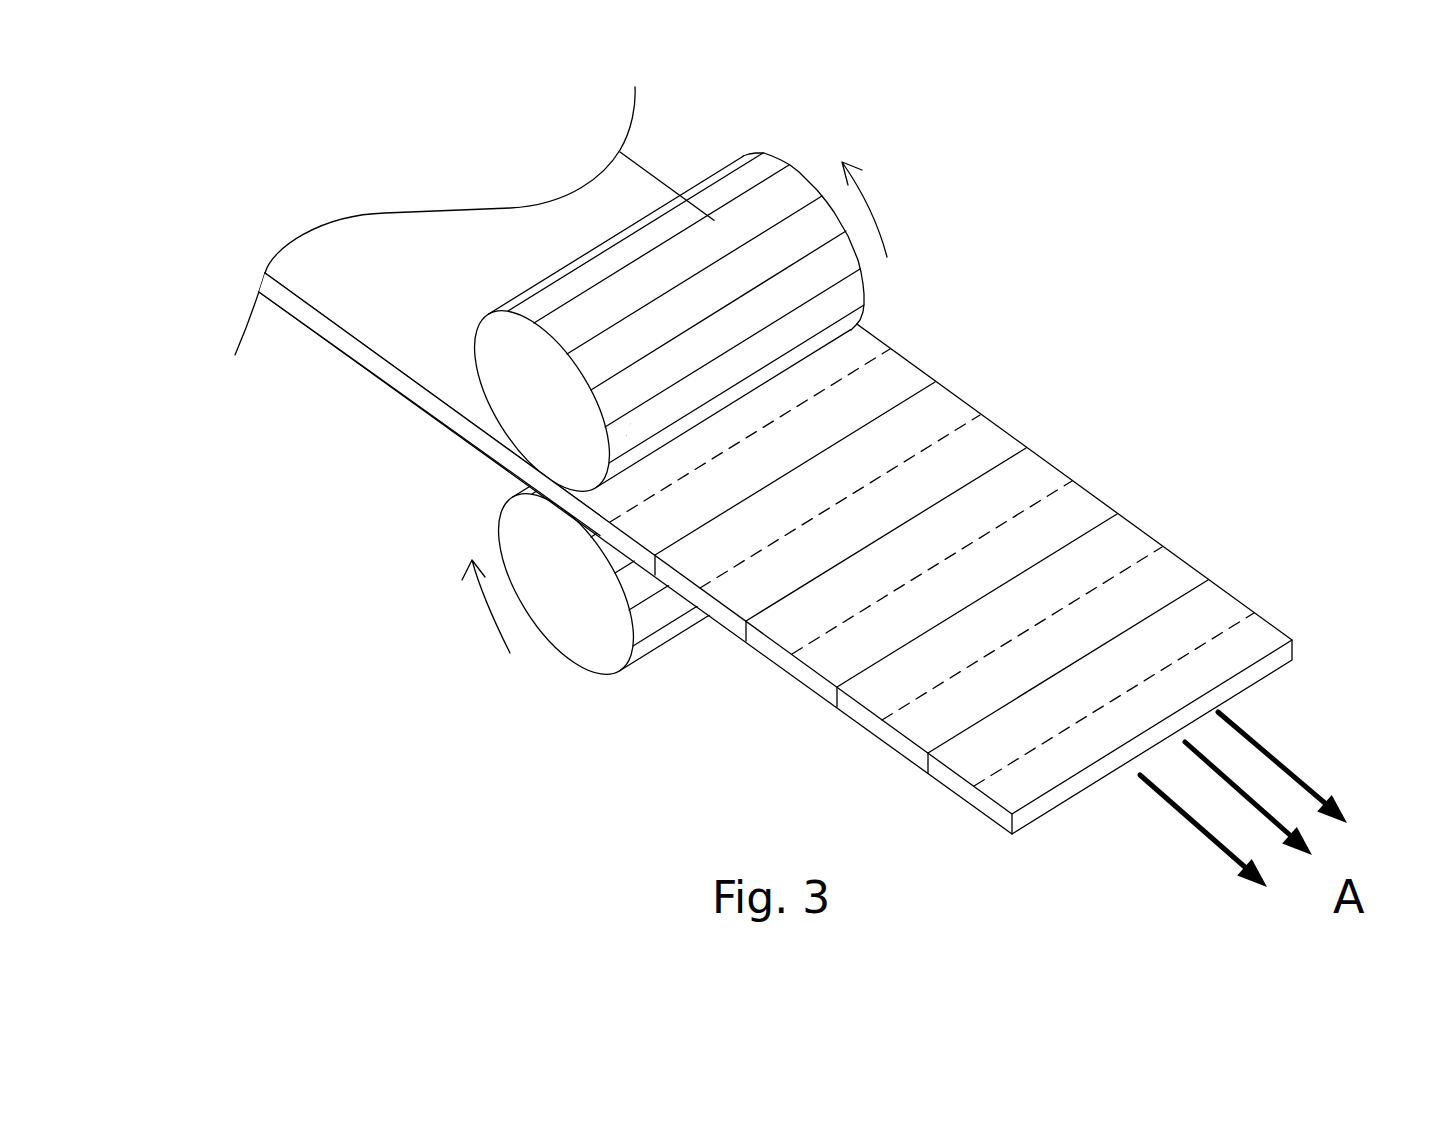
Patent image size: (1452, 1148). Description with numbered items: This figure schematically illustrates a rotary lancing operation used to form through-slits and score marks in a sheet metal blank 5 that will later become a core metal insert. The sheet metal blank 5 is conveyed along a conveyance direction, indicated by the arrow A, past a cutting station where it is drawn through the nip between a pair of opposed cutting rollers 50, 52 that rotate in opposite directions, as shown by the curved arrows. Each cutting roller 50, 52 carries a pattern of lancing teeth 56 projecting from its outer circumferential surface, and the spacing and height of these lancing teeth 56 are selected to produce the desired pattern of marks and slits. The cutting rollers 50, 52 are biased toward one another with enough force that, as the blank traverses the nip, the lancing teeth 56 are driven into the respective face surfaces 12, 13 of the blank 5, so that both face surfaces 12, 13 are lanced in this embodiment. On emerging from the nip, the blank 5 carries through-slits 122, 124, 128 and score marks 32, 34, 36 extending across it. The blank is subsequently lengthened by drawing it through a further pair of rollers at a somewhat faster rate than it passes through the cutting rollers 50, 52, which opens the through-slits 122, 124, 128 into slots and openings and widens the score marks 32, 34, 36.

The sheet metal blank 5 is at (282, 178).
The face surface 12 is at (438, 390).
The face surface 13 is at (470, 440).
The score mark 32 is at (836, 493).
The score mark 34 is at (947, 433).
The score mark 36 is at (1092, 645).
The cutting roller 50 is at (473, 335).
The cutting roller 52 is at (583, 673).
The lancing teeth 56 is at (803, 255).
The through-slit 122 is at (947, 743).
The through-slit 124 is at (1083, 530).
The through-slit 128 is at (900, 598).